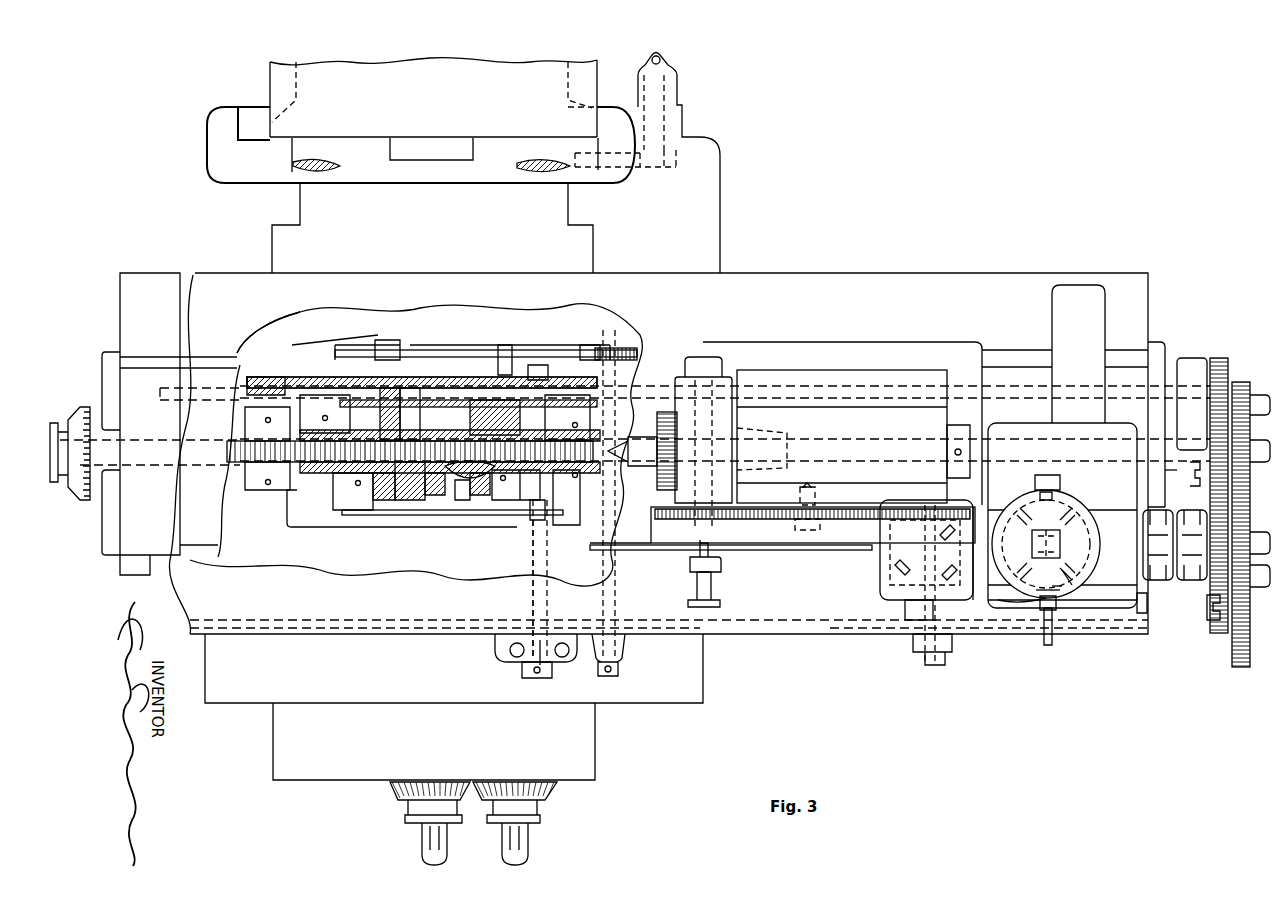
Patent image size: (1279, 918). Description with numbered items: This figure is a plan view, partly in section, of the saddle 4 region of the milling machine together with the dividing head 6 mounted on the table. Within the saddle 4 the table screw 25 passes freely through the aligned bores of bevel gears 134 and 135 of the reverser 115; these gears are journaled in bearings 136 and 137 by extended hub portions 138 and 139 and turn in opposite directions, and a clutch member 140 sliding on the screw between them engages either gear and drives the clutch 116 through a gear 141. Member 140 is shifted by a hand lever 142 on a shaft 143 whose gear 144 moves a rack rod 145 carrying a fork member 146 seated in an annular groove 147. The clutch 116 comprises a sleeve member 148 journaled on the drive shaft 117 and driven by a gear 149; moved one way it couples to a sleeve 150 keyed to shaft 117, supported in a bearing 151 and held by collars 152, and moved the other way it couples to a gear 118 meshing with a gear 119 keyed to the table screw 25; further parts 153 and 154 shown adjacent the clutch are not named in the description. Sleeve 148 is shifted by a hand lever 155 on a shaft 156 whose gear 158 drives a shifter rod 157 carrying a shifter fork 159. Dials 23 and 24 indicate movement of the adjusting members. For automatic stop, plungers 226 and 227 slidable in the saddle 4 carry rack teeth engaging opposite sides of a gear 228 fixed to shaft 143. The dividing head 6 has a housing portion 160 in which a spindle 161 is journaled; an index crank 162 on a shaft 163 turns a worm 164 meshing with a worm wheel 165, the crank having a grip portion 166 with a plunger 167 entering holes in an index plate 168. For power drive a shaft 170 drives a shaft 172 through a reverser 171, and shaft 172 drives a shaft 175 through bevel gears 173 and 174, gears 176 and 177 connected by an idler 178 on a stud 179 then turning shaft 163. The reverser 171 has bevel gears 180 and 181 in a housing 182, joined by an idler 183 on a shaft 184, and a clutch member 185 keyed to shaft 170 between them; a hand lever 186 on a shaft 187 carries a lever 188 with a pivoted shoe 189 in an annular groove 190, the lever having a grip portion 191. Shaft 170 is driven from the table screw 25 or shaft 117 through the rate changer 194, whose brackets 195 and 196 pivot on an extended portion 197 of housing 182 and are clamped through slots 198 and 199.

The saddle 4 is at (703, 660).
The dividing head 6 is at (845, 335).
The dial 23 is at (557, 785).
The dial 24 is at (390, 790).
The table screw 25 is at (290, 475).
The reverser 115 is at (393, 530).
The clutch 116 is at (468, 375).
The drive shaft 117 is at (322, 382).
The gear 118 is at (538, 365).
The gear 119 is at (575, 497).
The bevel gear 134 is at (390, 480).
The bevel gear 135 is at (482, 498).
The bearing 136 is at (340, 488).
The bearing 137 is at (540, 478).
The extended hub portion 138 is at (330, 425).
The extended hub portion 139 is at (505, 502).
The clutch member 140 is at (462, 495).
The gear 141 is at (435, 505).
The hand lever 142 is at (522, 672).
The shaft 143 is at (540, 583).
The gear 144 is at (545, 520).
The rod 145 is at (456, 502).
The fork member 146 is at (405, 518).
The annular groove 147 is at (372, 515).
The sleeve member 148 is at (498, 384).
The gear 149 is at (436, 388).
The sleeve 150 is at (392, 398).
The bearing 151 is at (340, 352).
The collars 152 is at (388, 345).
The bearing 153 is at (593, 402).
The nut 154 is at (588, 422).
The hand lever 155 is at (612, 674).
The shaft 156 is at (612, 612).
The shifter rod 157 is at (585, 350).
The gear 158 is at (625, 350).
The shifter fork 159 is at (506, 345).
The housing portion 160 is at (935, 350).
The spindle 161 is at (885, 440).
The index crank 162 is at (720, 566).
The shaft 163 is at (712, 543).
The worm 164 is at (738, 425).
The worm wheel 165 is at (712, 380).
The grip portion 166 is at (712, 585).
The plunger 167 is at (697, 575).
The index plate 168 is at (648, 548).
The drive shaft 170 is at (1110, 545).
The reverser 171 is at (1108, 610).
The shaft 172 is at (968, 520).
The bevel gear 173 is at (926, 582).
The bevel gear 174 is at (905, 578).
The shaft 175 is at (918, 556).
The gear 176 is at (935, 535).
The gear 177 is at (727, 495).
The idler 178 is at (818, 494).
The stud 179 is at (808, 530).
The bevel gear 180 is at (1075, 510).
The bevel gear 181 is at (1020, 528).
The housing 182 is at (1040, 500).
The idler 183 is at (1055, 500).
The shaft 184 is at (1045, 475).
The clutch member 185 is at (1015, 600).
The hand lever 186 is at (1042, 612).
The shaft 187 is at (1062, 600).
The lever 188 is at (1080, 598).
The pivoted shoe 189 is at (1038, 597).
The annular groove 190 is at (1060, 522).
The grip portion 191 is at (1047, 648).
The rate changer 194 is at (1228, 375).
The bracket 195 is at (1158, 580).
The bracket 196 is at (1190, 580).
The extended portion 197 is at (1205, 605).
The slot 198 is at (1187, 424).
The slot 199 is at (1170, 470).
The plunger 226 is at (500, 650).
The plunger 227 is at (550, 665).
The gear 228 is at (560, 655).